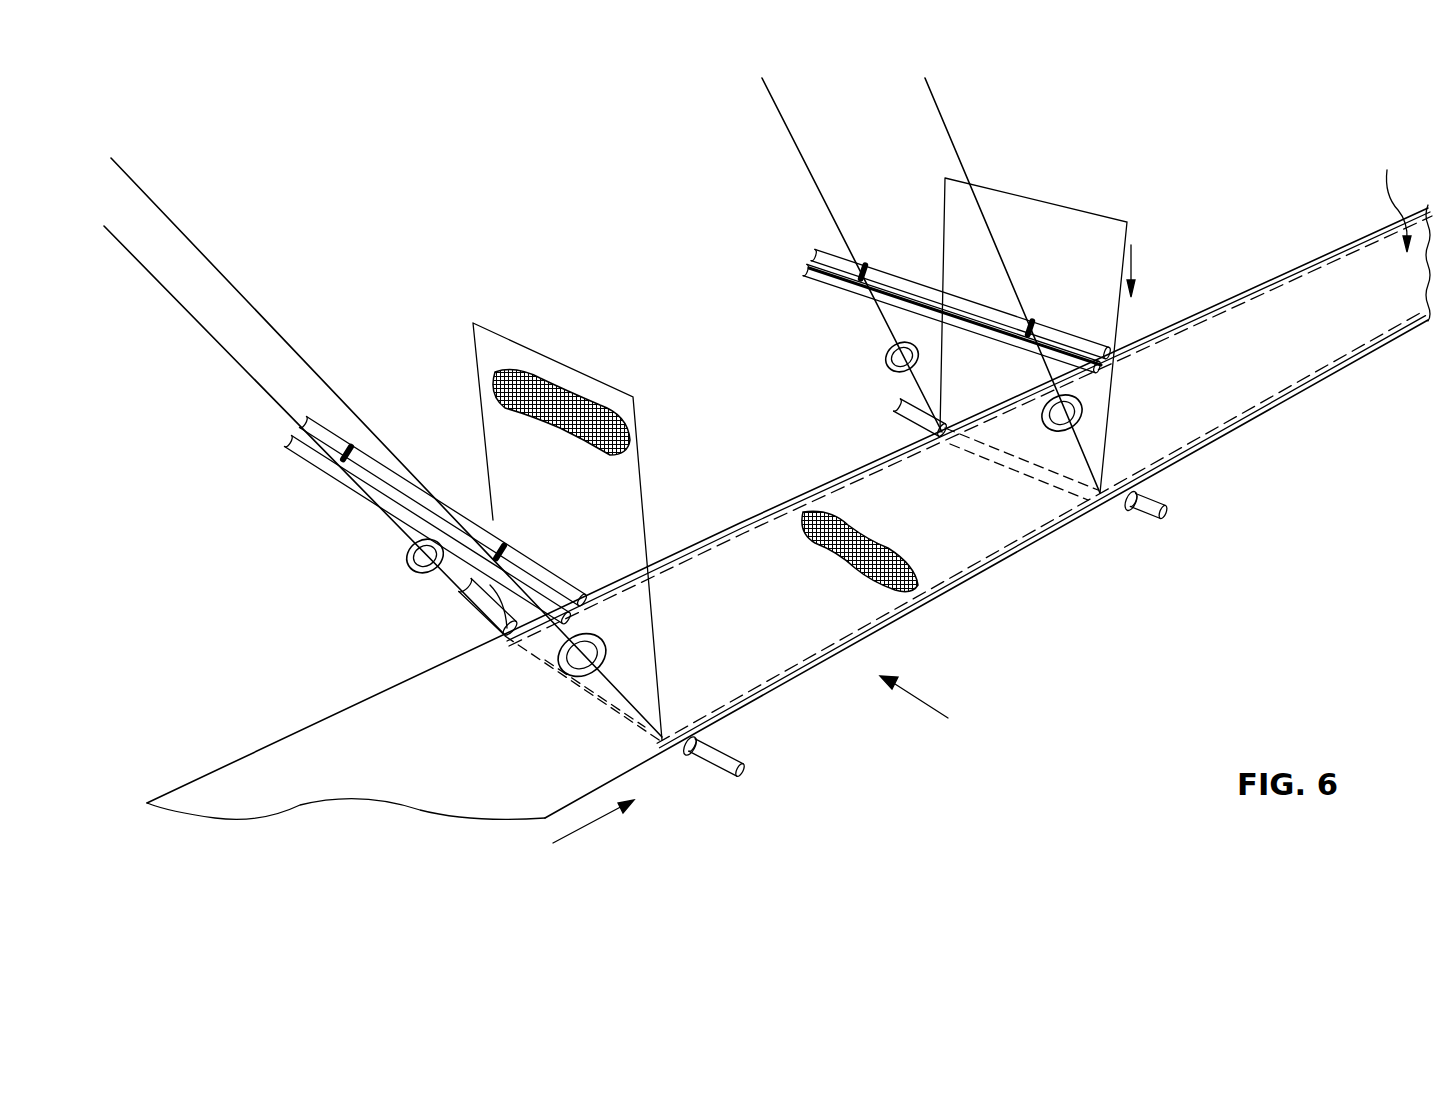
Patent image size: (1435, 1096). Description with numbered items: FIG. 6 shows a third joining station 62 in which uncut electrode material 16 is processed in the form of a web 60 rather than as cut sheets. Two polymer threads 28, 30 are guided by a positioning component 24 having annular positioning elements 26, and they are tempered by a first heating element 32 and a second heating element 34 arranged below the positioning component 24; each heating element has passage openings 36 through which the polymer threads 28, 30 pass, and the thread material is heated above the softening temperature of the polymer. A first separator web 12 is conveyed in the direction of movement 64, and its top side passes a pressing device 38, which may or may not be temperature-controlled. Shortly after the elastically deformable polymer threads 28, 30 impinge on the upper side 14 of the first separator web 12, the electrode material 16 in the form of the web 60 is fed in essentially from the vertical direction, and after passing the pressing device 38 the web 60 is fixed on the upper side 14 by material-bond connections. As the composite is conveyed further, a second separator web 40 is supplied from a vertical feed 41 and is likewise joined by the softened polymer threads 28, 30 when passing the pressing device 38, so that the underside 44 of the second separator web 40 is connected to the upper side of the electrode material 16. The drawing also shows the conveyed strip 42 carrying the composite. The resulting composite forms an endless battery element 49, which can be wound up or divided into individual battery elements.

The first separator web 12 is at (302, 731).
The upper side 14 is at (280, 777).
The electrode material 16 is at (592, 375).
The positioning component 24 is at (301, 424).
The annular positioning elements 26 is at (341, 462).
The polymer thread 28 is at (204, 253).
The polymer thread 30 is at (155, 279).
The first heating element 32 is at (558, 668).
The second heating element 34 is at (412, 563).
The passage openings 36 is at (428, 576).
The pressing device 38 is at (693, 753).
The second separator web 40 is at (1072, 209).
The vertical feed 41 is at (1136, 264).
The conveyor strip 42 is at (968, 476).
The underside 44 is at (958, 215).
The endless battery element 49 is at (1391, 193).
The web 60 is at (567, 521).
The third joining station 62 is at (905, 684).
The direction of movement 64 is at (610, 815).